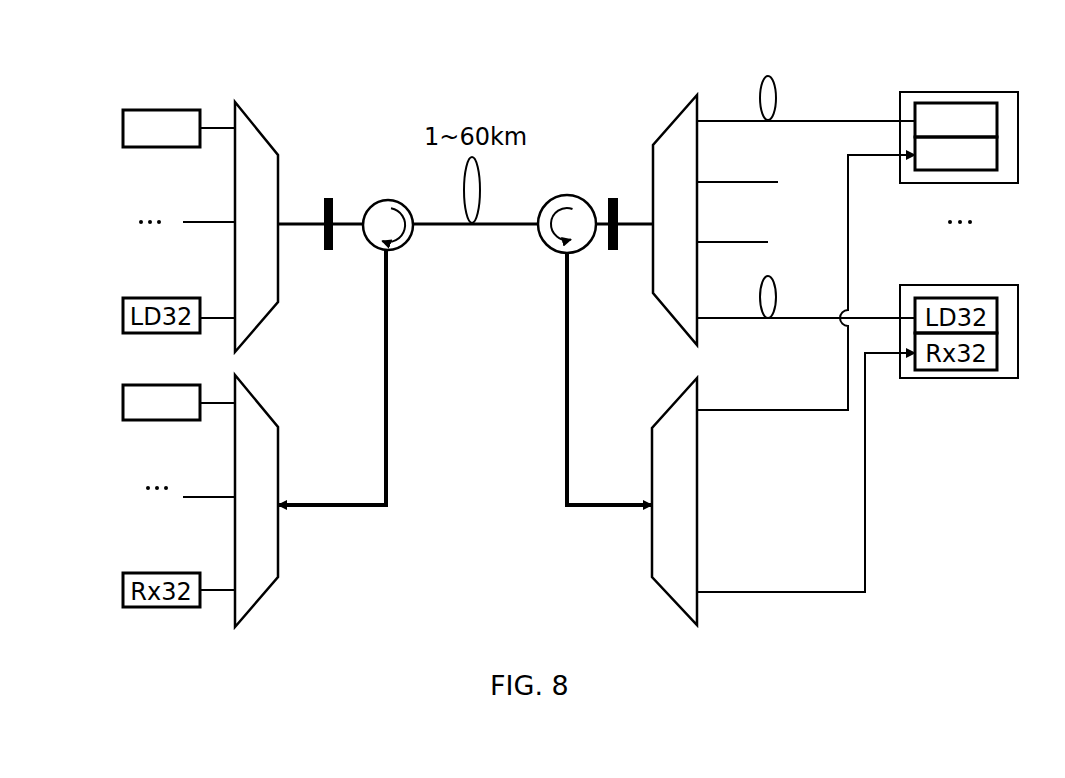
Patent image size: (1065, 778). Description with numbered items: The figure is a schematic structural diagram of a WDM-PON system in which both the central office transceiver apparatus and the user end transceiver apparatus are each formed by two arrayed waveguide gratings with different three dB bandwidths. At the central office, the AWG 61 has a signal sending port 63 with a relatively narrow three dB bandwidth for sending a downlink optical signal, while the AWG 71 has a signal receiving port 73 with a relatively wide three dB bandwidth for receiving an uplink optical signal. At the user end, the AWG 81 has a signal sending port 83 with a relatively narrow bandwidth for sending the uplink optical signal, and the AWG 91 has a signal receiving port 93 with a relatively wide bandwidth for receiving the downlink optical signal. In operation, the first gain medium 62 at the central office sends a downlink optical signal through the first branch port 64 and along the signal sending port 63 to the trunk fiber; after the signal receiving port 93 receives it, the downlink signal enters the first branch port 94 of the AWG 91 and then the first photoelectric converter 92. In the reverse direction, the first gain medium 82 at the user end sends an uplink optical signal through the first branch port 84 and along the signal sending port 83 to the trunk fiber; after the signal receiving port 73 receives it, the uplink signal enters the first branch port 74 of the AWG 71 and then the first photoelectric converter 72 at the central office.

The AWG 61 is at (270, 140).
The first gain medium 62 is at (123, 128).
The signal sending port 63 is at (287, 220).
The first branch port 64 is at (215, 125).
The AWG 71 is at (253, 600).
The first photoelectric converter 72 is at (123, 408).
The signal receiving port 73 is at (385, 410).
The first branch port 74 is at (217, 400).
The AWG 81 is at (683, 108).
The first gain medium 82 is at (997, 115).
The signal sending port 83 is at (643, 213).
The first branch port 84 is at (845, 120).
The AWG 91 is at (678, 607).
The first photoelectric converter 92 is at (997, 158).
The signal receiving port 93 is at (567, 312).
The first branch port 94 is at (790, 412).